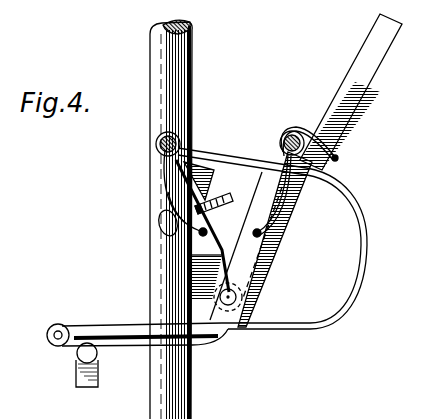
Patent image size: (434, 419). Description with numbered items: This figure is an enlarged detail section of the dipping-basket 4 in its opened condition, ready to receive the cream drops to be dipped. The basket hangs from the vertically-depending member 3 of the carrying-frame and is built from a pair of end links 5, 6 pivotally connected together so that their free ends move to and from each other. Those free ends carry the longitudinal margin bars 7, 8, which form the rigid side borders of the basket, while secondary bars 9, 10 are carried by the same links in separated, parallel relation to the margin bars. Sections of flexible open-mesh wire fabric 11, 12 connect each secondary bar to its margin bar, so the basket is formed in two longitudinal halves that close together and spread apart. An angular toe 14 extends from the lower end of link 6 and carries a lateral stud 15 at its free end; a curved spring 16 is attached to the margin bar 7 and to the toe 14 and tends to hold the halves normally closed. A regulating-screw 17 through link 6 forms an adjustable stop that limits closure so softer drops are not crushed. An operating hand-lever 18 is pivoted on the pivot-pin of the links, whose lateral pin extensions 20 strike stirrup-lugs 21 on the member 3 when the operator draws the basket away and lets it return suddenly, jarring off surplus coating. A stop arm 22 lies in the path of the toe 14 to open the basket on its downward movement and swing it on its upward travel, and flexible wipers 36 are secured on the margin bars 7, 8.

The vertically-depending member 3 is at (193, 80).
The dipping-basket 4 is at (239, 140).
The end link 5 is at (172, 180).
The end link 6 is at (245, 240).
The margin bar 7 is at (182, 146).
The margin bar 8 is at (280, 144).
The secondary bar 9 is at (178, 252).
The secondary bar 10 is at (296, 238).
The open-mesh section 11 is at (165, 198).
The open-mesh section 12 is at (297, 206).
The angular toe 14 is at (110, 322).
The lateral stud 15 is at (58, 324).
The curved spring 16 is at (351, 292).
The regulating-screw 17 is at (216, 197).
The operating hand-lever 18 is at (362, 87).
The lateral pin extension 20 is at (243, 298).
The stirrup-lug 21 is at (200, 285).
The stop arm 22 is at (76, 360).
The flexible wiper 36 is at (338, 157).